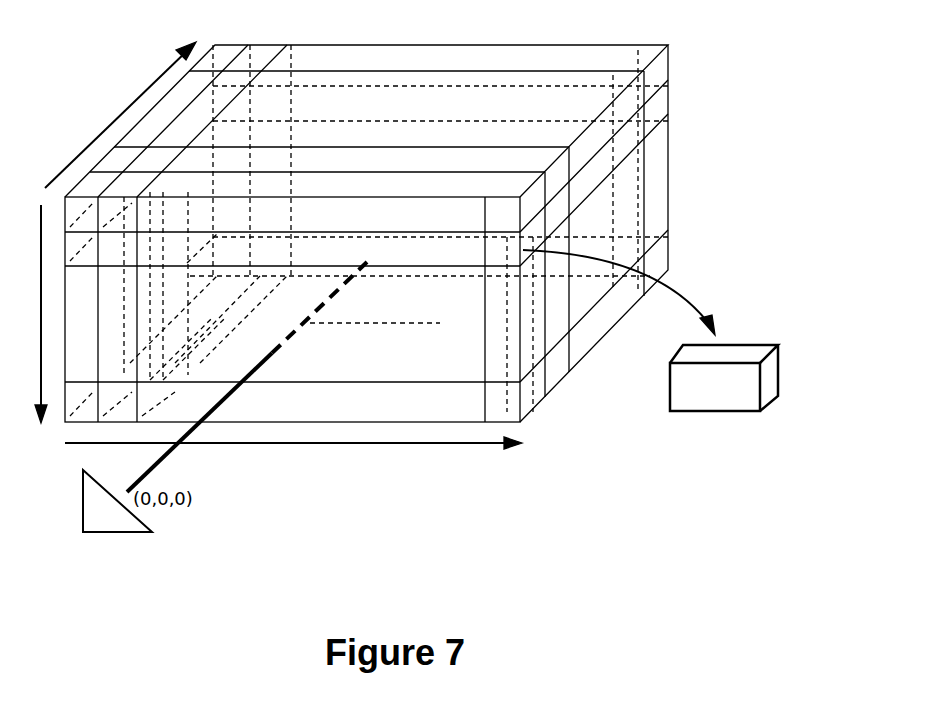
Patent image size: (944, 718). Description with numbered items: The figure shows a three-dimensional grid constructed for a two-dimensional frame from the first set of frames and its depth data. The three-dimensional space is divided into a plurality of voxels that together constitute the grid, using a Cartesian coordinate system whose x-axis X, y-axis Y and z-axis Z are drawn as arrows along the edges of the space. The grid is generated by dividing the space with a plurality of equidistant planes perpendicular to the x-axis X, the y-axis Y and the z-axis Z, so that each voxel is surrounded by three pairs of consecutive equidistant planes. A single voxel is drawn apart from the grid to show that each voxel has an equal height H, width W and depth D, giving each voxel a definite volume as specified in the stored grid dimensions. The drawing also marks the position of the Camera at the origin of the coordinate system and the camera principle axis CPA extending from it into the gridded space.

The x-axis X is at (293, 454).
The y-axis Y is at (30, 314).
The z-axis Z is at (120, 115).
The height H is at (716, 390).
The width W is at (727, 390).
The depth D is at (727, 385).
The camera Camera is at (170, 511).
The camera principle axis CPA is at (170, 460).